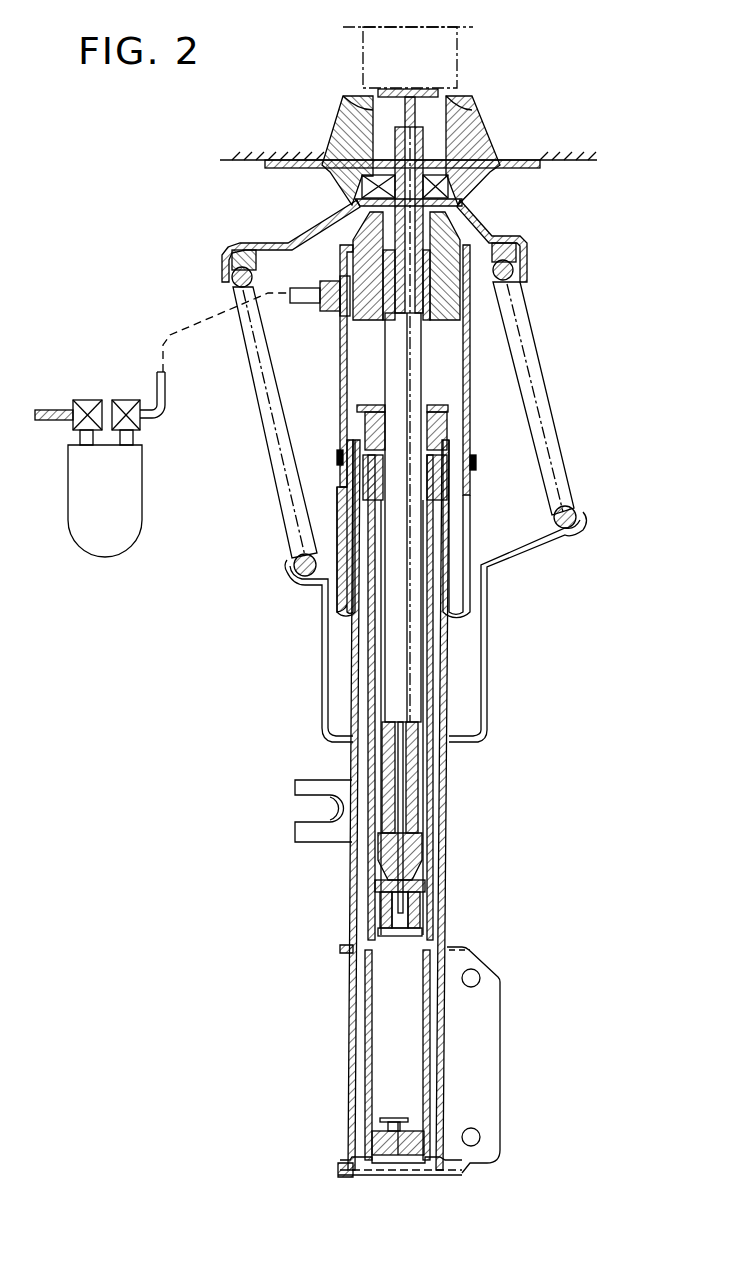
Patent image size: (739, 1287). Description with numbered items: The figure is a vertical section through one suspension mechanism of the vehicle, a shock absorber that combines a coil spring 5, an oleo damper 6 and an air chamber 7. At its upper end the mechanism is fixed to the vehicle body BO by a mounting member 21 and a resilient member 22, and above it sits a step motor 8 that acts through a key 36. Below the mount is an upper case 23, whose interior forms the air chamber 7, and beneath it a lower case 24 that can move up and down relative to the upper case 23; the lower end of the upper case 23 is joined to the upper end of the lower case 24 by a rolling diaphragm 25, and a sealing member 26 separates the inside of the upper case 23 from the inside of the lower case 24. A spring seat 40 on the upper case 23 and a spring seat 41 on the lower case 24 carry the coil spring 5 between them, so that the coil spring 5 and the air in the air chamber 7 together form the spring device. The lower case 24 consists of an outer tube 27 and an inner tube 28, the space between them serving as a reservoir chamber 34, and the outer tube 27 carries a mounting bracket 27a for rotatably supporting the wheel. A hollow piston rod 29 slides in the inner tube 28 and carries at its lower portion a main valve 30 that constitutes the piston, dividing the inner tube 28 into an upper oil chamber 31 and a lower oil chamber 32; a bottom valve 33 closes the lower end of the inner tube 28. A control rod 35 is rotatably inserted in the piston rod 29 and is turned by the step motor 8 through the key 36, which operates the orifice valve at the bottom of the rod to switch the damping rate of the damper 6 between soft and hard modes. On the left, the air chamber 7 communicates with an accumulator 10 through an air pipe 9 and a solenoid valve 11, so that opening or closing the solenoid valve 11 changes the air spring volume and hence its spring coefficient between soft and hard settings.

The step motor 8 is at (414, 32).
The key 36 is at (438, 93).
The resilient member 22 is at (468, 123).
The mounting member 21 is at (508, 162).
The body BO is at (582, 163).
The spring seat 40 is at (500, 240).
The coil spring 5 is at (520, 296).
The upper case 23 is at (345, 345).
The air chamber 7 is at (358, 385).
The piston rod 29 is at (408, 644).
The sealing member 26 is at (445, 415).
The rolling diaphragm 25 is at (470, 506).
The spring seat 41 is at (503, 565).
The lower case 24 is at (452, 773).
The inner tube 28 is at (433, 800).
The outer tube 27 is at (447, 821).
The control rod 35 is at (400, 765).
The upper oil chamber 31 is at (424, 848).
The main valve 30 is at (428, 925).
The mounting bracket 27a is at (310, 835).
The oleo damper 6 is at (345, 892).
The lower oil chamber 32 is at (388, 988).
The reservoir chamber 34 is at (362, 1025).
The bottom valve 33 is at (398, 1115).
The solenoid valve 11 is at (124, 400).
The air pipe 9 is at (167, 405).
The accumulator 10 is at (142, 500).